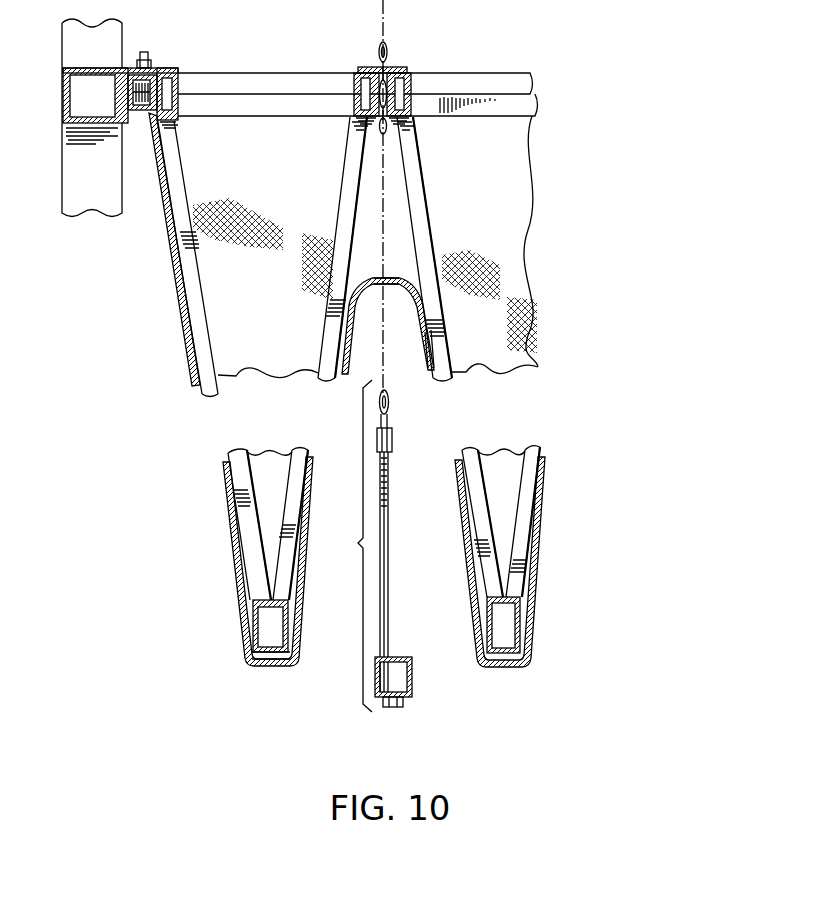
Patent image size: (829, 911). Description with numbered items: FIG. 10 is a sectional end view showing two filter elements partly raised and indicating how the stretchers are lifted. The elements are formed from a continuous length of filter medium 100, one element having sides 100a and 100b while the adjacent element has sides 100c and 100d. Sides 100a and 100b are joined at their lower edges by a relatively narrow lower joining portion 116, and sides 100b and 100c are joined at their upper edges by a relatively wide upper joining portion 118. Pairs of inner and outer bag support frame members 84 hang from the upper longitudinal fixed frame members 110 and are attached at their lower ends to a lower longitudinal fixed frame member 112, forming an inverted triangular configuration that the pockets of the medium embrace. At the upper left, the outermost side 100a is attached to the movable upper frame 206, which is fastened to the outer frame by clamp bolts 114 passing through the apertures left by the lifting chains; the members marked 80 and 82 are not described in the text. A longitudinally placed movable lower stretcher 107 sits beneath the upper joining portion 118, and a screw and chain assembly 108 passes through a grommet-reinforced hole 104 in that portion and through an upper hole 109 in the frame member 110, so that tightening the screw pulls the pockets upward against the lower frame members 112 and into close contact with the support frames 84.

The post with square tube 80 is at (63, 93).
The horizontal beam 82 is at (487, 72).
The bag support frame member 84 is at (352, 192).
The filter medium 100 is at (182, 314).
The outermost side of filter element 100a is at (235, 545).
The side of filter element 100b is at (305, 573).
The side of filter element 100c is at (470, 575).
The side of filter element 100d is at (542, 518).
The hole 104 is at (388, 278).
The lower stretcher 107 is at (412, 672).
The screw and chain assembly 108 is at (355, 546).
The upper hole 109 is at (410, 82).
The upper longitudinal fixed frame member 110 is at (353, 80).
The lower longitudinal fixed frame member 112 is at (267, 665).
The clamp bolt 114 is at (150, 63).
The lower joining portion 116 is at (280, 668).
The upper joining portion 118 is at (372, 280).
The movable upper frame 206 is at (180, 72).